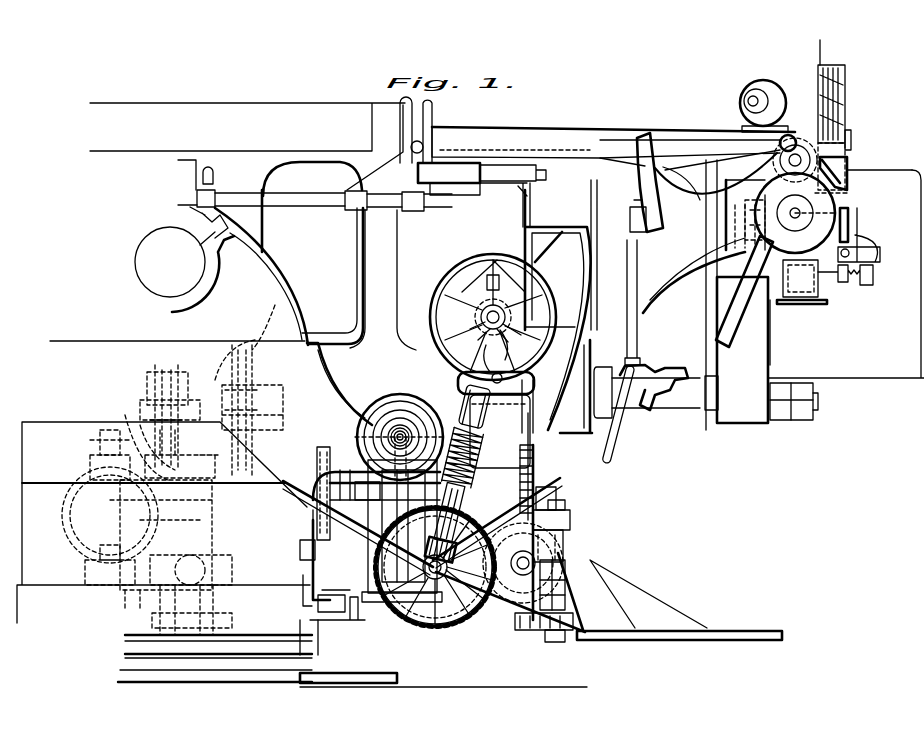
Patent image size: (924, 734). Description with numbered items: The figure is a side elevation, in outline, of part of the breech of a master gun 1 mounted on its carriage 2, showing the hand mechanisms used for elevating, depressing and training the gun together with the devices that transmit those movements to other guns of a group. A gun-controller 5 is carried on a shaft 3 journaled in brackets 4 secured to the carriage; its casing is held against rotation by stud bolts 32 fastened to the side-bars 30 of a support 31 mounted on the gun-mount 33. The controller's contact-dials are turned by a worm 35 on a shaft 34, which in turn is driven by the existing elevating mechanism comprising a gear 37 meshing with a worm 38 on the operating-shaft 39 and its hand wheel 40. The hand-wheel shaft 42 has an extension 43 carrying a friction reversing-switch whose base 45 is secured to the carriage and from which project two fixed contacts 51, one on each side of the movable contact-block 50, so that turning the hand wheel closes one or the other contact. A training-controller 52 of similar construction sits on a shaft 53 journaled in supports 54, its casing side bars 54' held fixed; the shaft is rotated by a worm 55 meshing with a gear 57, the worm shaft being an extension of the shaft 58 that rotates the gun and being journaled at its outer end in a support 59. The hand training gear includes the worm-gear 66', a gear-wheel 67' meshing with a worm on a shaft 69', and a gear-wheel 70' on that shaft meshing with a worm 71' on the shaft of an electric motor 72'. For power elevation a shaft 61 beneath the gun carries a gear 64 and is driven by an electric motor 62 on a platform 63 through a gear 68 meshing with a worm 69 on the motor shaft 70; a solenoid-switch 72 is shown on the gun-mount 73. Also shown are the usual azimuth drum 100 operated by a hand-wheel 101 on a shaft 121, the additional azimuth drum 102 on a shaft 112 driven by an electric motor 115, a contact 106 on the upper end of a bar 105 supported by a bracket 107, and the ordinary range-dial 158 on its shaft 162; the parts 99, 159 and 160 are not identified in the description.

The gun 1 is at (759, 295).
The carriage 2 is at (163, 482).
The shaft 3 is at (318, 560).
The brackets 4 is at (310, 558).
The gun-controller 5 is at (335, 542).
The base 45 is at (535, 379).
The side-bars 30 is at (372, 491).
The support 31 is at (362, 478).
The stud bolts 32 is at (315, 471).
The gun-mount 33 is at (320, 390).
The shaft 34 is at (375, 433).
The worm 35 is at (405, 433).
The gear 37 is at (458, 412).
The worm 38 is at (478, 452).
The operating-shaft 39 is at (525, 386).
The hand wheel 40 is at (548, 318).
The shaft 42 is at (481, 311).
The extension 43 is at (512, 327).
The movable contact-block 50 is at (135, 428).
The fixed contacts 51 is at (498, 298).
The training-controller 52 is at (262, 322).
The shaft 53 is at (278, 400).
The supports 54 is at (244, 410).
The side bars 54' is at (267, 321).
The worm 55 is at (185, 400).
The gear 57 is at (158, 393).
The shaft 58 is at (172, 520).
The support 59 is at (185, 374).
The shaft 61 is at (455, 622).
The electric motor 62 is at (560, 549).
The platform 63 is at (490, 618).
The gear 64 is at (405, 628).
The worm-gear 66' is at (87, 466).
The gear-wheel 67' is at (94, 442).
The gear 68 is at (535, 470).
The worm 69 is at (661, 595).
The shaft 69' is at (96, 515).
The motor shaft 70 is at (564, 508).
The gear-wheel 70' is at (85, 558).
The worm 71' is at (117, 602).
The solenoid-switches 72 is at (345, 617).
The electric motor 72' is at (201, 587).
The gun-mount 73 is at (320, 672).
The bar 99 is at (495, 128).
The azimuth drum 100 is at (850, 172).
The hand-wheel 101 is at (796, 150).
The azimuth drum 102 is at (847, 126).
The bar 105 is at (846, 100).
The contact 106 is at (822, 64).
The bracket 107 is at (852, 193).
The shaft 112 is at (848, 68).
The electric motor 115 is at (790, 76).
The shaft 121 is at (790, 213).
The range-dial 158 is at (740, 230).
The bracket 159 is at (856, 251).
The box 160 is at (840, 286).
The shaft 162 is at (793, 217).